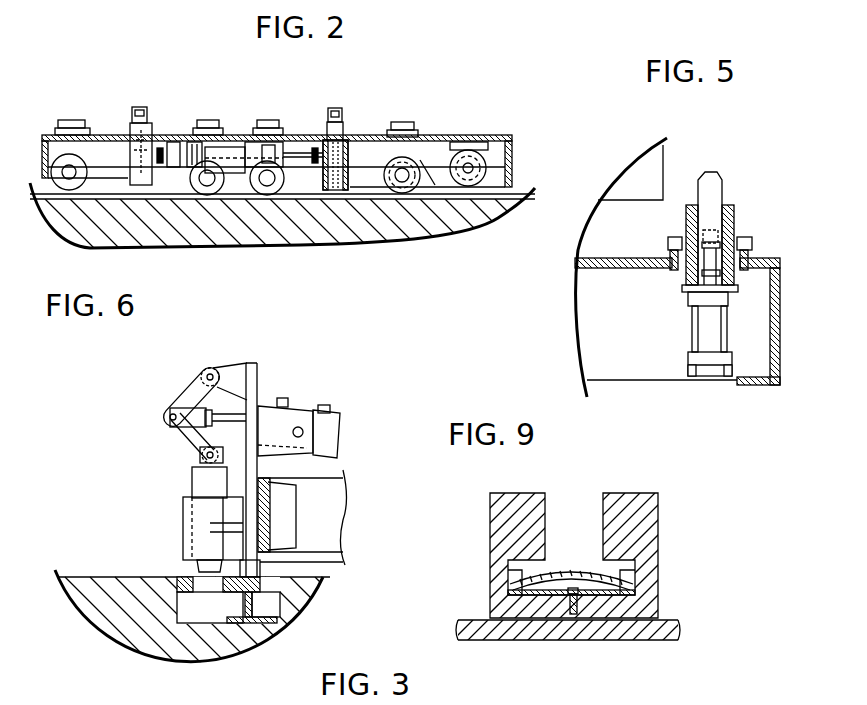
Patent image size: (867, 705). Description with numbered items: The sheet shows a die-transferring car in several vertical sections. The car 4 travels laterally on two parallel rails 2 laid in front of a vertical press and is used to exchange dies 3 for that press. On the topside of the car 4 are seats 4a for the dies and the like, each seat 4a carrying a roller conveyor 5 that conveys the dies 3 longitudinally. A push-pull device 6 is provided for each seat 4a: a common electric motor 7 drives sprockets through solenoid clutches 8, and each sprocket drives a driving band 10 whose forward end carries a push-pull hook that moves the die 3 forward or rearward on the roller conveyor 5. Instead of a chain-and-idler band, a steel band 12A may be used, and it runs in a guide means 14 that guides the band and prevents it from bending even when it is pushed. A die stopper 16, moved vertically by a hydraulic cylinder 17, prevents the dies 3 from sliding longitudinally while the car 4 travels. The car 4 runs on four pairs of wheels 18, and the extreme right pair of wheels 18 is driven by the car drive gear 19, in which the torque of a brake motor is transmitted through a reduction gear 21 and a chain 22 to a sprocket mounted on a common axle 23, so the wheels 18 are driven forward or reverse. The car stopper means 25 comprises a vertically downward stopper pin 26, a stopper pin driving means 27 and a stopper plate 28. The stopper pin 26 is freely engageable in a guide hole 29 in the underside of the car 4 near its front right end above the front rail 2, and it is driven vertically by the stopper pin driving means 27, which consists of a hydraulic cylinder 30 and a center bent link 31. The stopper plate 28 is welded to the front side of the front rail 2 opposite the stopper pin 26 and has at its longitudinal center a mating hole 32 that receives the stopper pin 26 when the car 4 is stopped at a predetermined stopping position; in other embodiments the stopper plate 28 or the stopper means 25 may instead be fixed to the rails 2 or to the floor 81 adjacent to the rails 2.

In FIG. 2, the rail 2 is at (510, 205).
In FIG. 6, the rail 2 is at (257, 620).
In FIG. 5, the die 3 is at (653, 165).
In FIG. 2, the car 4 is at (362, 133).
In FIG. 5, the car 4 is at (647, 263).
In FIG. 6, the car 4 is at (322, 517).
In FIG. 9, the car 4 is at (663, 632).
In FIG. 2, the seat 4a is at (175, 140).
In FIG. 2, the roller conveyor 5 is at (70, 125).
In FIG. 2, the push-pull device 6 is at (143, 107).
In FIG. 2, the electric motor 7 is at (240, 195).
In FIG. 2, the solenoid clutch 8 is at (205, 195).
In FIG. 9, the driving band 10 is at (573, 601).
In FIG. 9, the steel band 12A is at (571, 565).
In FIG. 9, the guide means 14 is at (648, 540).
In FIG. 5, the die stopper 16 is at (722, 183).
In FIG. 5, the hydraulic cylinder 17 is at (710, 364).
In FIG. 2, the wheels 18 is at (385, 185).
In FIG. 2, the car drive gear 19 is at (457, 190).
In FIG. 2, the reduction gear 21 is at (468, 165).
In FIG. 2, the chain 22 is at (427, 188).
In FIG. 2, the common axle 23 is at (402, 172).
In FIG. 6, the car stopper means 25 is at (177, 464).
In FIG. 6, the stopper pin 26 is at (195, 568).
In FIG. 6, the stopper pin driving means 27 is at (118, 325).
In FIG. 6, the stopper plate 28 is at (118, 630).
In FIG. 6, the guide hole 29 is at (180, 500).
In FIG. 6, the hydraulic cylinder 30 is at (322, 405).
In FIG. 6, the center bent link 31 is at (193, 405).
In FIG. 6, the mating hole 32 is at (206, 586).
In FIG. 6, the floor 81 is at (85, 575).